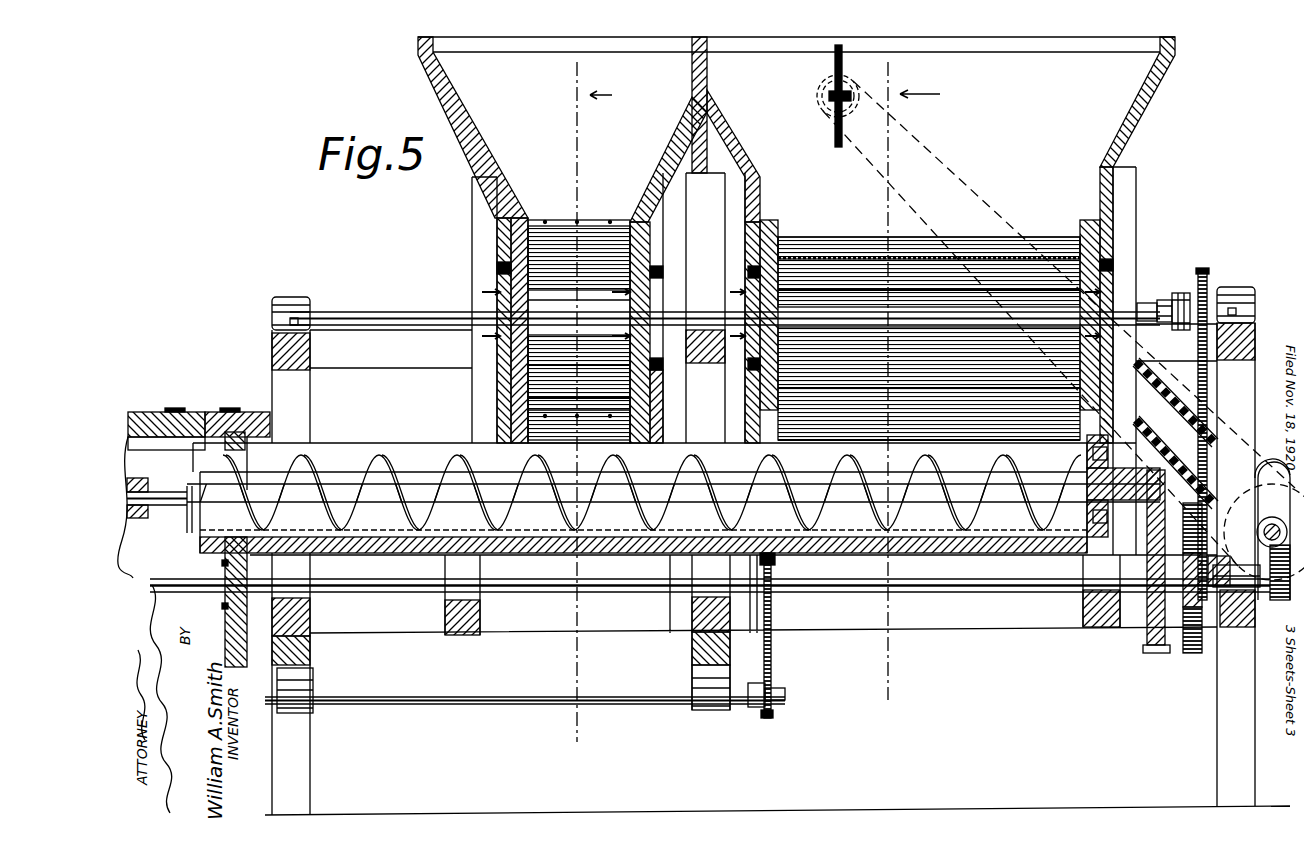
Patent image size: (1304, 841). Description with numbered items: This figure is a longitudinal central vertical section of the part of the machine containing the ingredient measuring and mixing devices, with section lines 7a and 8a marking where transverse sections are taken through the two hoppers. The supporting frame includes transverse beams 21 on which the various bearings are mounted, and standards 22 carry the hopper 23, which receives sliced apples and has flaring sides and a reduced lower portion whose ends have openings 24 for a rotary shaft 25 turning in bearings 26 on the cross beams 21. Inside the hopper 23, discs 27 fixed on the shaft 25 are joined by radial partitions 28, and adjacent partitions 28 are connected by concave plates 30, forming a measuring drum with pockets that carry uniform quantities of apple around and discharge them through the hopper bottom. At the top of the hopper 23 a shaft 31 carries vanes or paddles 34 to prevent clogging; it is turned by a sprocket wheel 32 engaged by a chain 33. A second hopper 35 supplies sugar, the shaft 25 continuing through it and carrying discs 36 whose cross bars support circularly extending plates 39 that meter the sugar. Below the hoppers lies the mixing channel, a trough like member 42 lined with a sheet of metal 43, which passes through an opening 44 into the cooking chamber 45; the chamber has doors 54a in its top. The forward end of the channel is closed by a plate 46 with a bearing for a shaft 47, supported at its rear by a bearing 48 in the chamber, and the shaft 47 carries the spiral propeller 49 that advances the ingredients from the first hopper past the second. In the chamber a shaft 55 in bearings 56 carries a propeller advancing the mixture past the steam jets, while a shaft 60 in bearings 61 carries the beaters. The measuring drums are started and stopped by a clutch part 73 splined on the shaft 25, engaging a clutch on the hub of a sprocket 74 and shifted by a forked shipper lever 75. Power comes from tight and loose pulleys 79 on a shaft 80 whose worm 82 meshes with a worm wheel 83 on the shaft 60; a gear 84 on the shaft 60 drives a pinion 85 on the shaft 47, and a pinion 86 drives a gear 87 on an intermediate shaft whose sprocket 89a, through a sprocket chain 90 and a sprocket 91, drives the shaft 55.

The transverse beams 21 is at (272, 343).
The standards 22 is at (480, 203).
The hopper 23 is at (1136, 134).
The openings 24 is at (748, 271).
The rotary shaft 25 is at (1146, 302).
The bearings 26 is at (306, 309).
The discs 27 is at (774, 222).
The partitions 28 is at (929, 338).
The plates 30 is at (808, 258).
The shaft 31 is at (836, 101).
The sprocket wheel 32 is at (820, 85).
The chain 33 is at (915, 142).
The vanes or paddles 34 is at (835, 61).
The second hopper 35 is at (452, 82).
The discs 36 is at (505, 236).
The circularly extending plates 39 is at (592, 227).
The trough like member 42 is at (428, 441).
The sheet of metal 43 is at (345, 473).
The opening 44 is at (252, 468).
The cooking container portion or chamber 45 is at (210, 412).
The plate 46 is at (1085, 447).
The shaft 47 is at (170, 508).
The bearing 48 is at (135, 478).
The screw shaft 49 is at (935, 466).
The doors 54a is at (184, 416).
The shaft 55 is at (418, 704).
The bearings 56 is at (298, 714).
The shaft 60 is at (1018, 586).
The bearings 61 is at (1250, 560).
The clutch part 73 is at (1161, 323).
The sprocket 74 is at (1208, 282).
The shipper lever 75 is at (1179, 331).
The tight and loose pulleys 79 is at (1272, 466).
The shaft 80 is at (1275, 515).
The worm 82 is at (1260, 522).
The worm wheel 83 is at (1276, 601).
The gear 84 is at (1147, 546).
The pinion 85 is at (1155, 455).
The pinion 86 is at (1183, 645).
The gear 87 is at (1197, 655).
The sprocket 89a is at (775, 568).
The sprocket chain 90 is at (773, 652).
The sprocket 91 is at (776, 711).
The section line 7a is at (908, 393).
The section line 8a is at (589, 410).